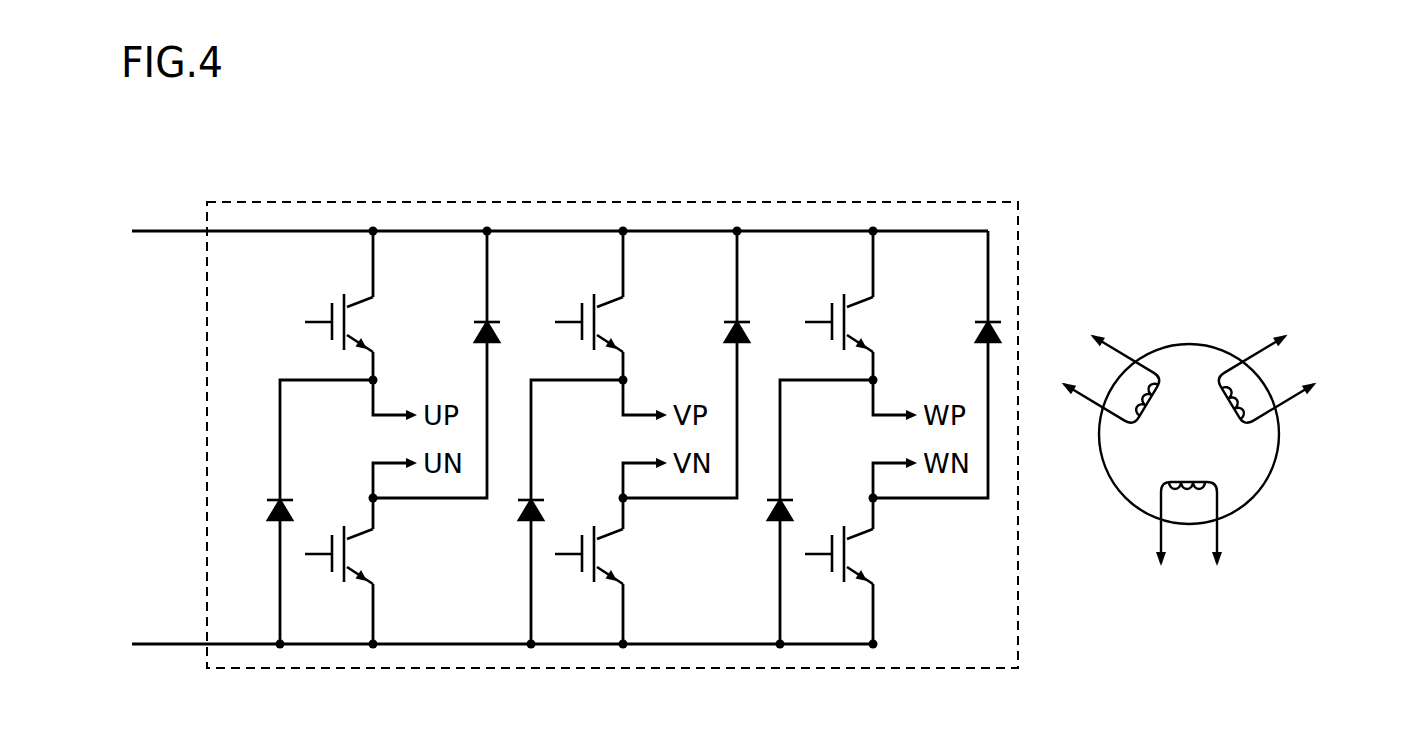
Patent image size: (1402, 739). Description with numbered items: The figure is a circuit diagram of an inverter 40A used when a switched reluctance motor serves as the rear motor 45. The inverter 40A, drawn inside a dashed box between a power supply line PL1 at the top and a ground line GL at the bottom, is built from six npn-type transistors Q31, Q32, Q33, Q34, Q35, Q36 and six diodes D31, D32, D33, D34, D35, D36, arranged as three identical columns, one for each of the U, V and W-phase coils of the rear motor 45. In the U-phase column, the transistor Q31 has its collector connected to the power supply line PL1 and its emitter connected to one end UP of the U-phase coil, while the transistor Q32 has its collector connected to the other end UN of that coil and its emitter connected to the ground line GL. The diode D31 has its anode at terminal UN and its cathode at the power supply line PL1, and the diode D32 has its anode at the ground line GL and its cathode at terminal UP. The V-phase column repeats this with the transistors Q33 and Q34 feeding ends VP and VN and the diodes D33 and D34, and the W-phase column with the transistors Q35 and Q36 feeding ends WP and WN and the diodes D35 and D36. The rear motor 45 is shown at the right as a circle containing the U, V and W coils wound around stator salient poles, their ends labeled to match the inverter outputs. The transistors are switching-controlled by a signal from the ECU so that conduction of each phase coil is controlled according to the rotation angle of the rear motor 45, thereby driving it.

The inverter 40A is at (914, 202).
The rear motor 45 is at (1188, 343).
The power supply line PL1 is at (168, 230).
The ground line GL is at (167, 647).
The npn-type transistor Q31 is at (330, 307).
The npn-type transistor Q32 is at (330, 539).
The npn-type transistor Q33 is at (580, 307).
The npn-type transistor Q34 is at (580, 539).
The npn-type transistor Q35 is at (830, 307).
The npn-type transistor Q36 is at (830, 539).
The diode D31 is at (476, 335).
The diode D32 is at (271, 512).
The diode D33 is at (726, 335).
The diode D34 is at (522, 512).
The diode D35 is at (977, 335).
The diode D36 is at (771, 512).